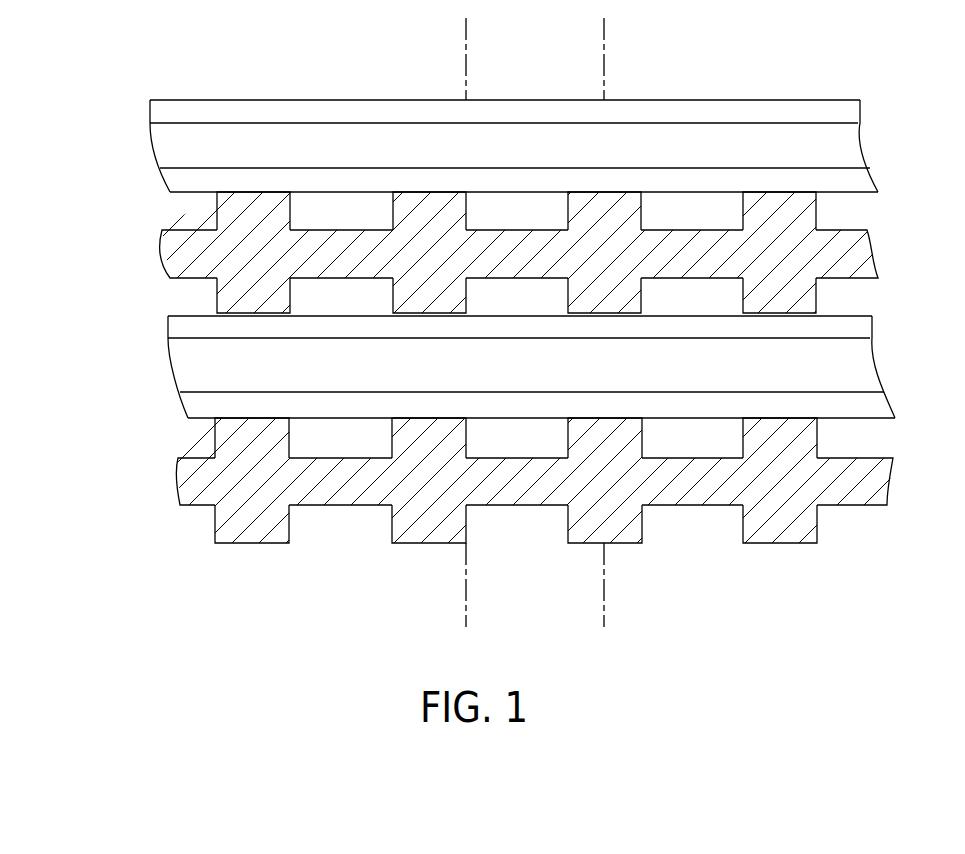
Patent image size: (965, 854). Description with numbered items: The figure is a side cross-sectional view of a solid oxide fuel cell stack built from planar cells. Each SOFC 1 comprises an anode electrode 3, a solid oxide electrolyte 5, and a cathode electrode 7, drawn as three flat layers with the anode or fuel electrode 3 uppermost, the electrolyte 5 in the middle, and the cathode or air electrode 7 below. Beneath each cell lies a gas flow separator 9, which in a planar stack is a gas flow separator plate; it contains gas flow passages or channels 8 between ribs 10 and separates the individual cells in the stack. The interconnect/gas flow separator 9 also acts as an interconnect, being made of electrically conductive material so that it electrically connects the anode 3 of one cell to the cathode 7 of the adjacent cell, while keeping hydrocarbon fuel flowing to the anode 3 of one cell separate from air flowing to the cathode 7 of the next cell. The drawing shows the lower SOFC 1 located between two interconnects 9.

The solid oxide fuel cell 1 is at (908, 417).
The anode electrode 3 is at (168, 330).
The solid oxide electrolyte 5 is at (170, 367).
The cathode electrode 7 is at (182, 407).
The gas flow passages 8 is at (516, 367).
The gas flow separator 9 is at (908, 530).
The ribs 10 is at (215, 528).